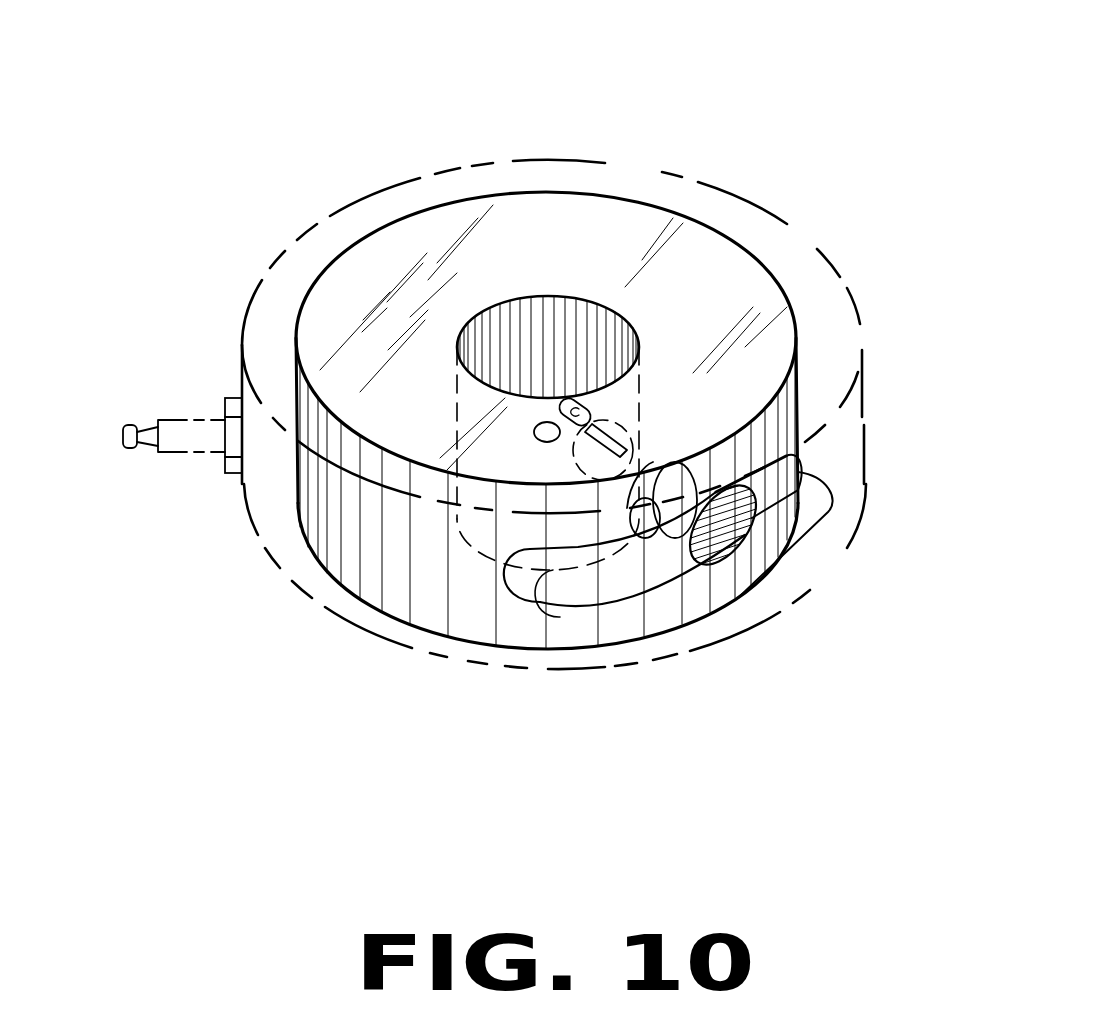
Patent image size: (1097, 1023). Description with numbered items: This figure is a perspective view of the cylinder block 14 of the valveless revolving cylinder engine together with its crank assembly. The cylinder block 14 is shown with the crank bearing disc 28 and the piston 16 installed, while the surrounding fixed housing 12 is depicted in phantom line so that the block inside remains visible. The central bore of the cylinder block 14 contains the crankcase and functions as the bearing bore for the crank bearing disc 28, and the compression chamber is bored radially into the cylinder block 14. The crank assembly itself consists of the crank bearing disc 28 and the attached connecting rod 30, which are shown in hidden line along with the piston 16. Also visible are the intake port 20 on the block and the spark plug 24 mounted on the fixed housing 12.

The fixed housing 12 is at (352, 628).
The cylinder block 14 is at (370, 267).
The piston 16 is at (652, 455).
The intake port 20 is at (808, 542).
The spark plug 24 is at (209, 418).
The crank bearing disc 28 is at (552, 390).
The connecting rod 30 is at (605, 405).